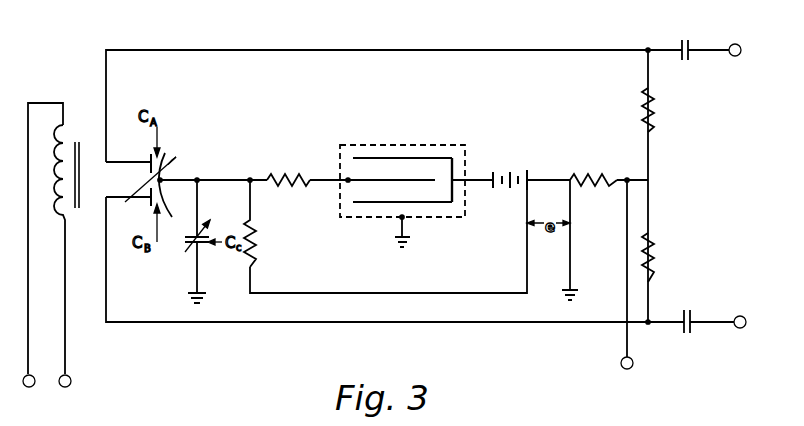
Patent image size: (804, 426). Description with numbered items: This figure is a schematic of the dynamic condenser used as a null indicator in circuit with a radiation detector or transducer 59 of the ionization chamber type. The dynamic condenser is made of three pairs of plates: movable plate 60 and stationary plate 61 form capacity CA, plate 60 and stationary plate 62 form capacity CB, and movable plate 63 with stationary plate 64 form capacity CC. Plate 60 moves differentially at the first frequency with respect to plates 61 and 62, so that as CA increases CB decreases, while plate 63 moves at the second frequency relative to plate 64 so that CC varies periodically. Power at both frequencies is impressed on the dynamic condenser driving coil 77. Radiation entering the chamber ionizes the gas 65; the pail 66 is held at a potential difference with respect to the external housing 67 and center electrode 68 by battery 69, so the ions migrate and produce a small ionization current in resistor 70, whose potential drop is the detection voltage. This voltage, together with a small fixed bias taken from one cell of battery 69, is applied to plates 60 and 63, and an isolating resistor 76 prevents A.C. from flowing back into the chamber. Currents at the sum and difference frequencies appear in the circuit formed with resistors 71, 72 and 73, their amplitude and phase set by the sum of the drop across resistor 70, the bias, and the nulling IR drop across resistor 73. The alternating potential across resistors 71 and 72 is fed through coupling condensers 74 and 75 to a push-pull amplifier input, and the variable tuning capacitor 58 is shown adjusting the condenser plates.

The variable tuning capacitor 58 is at (181, 174).
The radiation detector or transducer 59 is at (399, 174).
The movable condenser plate 60 is at (167, 157).
The stationary condenser plate 61 is at (148, 156).
The stationary condenser plate 62 is at (148, 205).
The movable condenser plate 63 is at (201, 224).
The stationary condenser plate 64 is at (193, 252).
The gas 65 is at (447, 165).
The pail 66 is at (452, 202).
The external housing 67 is at (446, 128).
The center electrode 68 is at (357, 182).
The battery 69 is at (510, 170).
The resistor 70 is at (255, 234).
The resistor 71 is at (655, 130).
The resistor 72 is at (657, 250).
The resistor 73 is at (602, 172).
The coupling condenser 74 is at (680, 44).
The coupling condenser 75 is at (693, 330).
The isolating resistor 76 is at (298, 178).
The dynamic condenser driving coil 77 is at (57, 133).